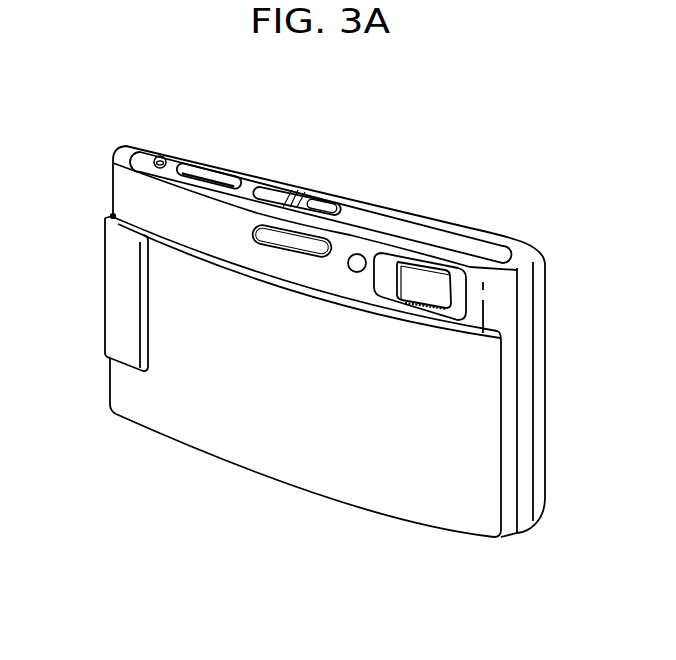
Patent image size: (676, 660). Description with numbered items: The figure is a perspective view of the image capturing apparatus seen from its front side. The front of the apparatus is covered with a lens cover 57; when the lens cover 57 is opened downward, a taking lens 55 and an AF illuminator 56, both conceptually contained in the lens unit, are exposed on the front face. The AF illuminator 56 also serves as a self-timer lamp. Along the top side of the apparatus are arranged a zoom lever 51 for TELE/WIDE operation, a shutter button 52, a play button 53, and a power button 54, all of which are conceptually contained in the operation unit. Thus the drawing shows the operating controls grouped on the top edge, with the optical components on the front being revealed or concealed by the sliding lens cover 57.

The zoom lever 51 is at (148, 149).
The shutter button 52 is at (190, 158).
The play button 53 is at (280, 188).
The power button 54 is at (325, 203).
The taking lens 55 is at (440, 300).
The AF illuminator 56 is at (357, 254).
The lens cover 57 is at (480, 437).